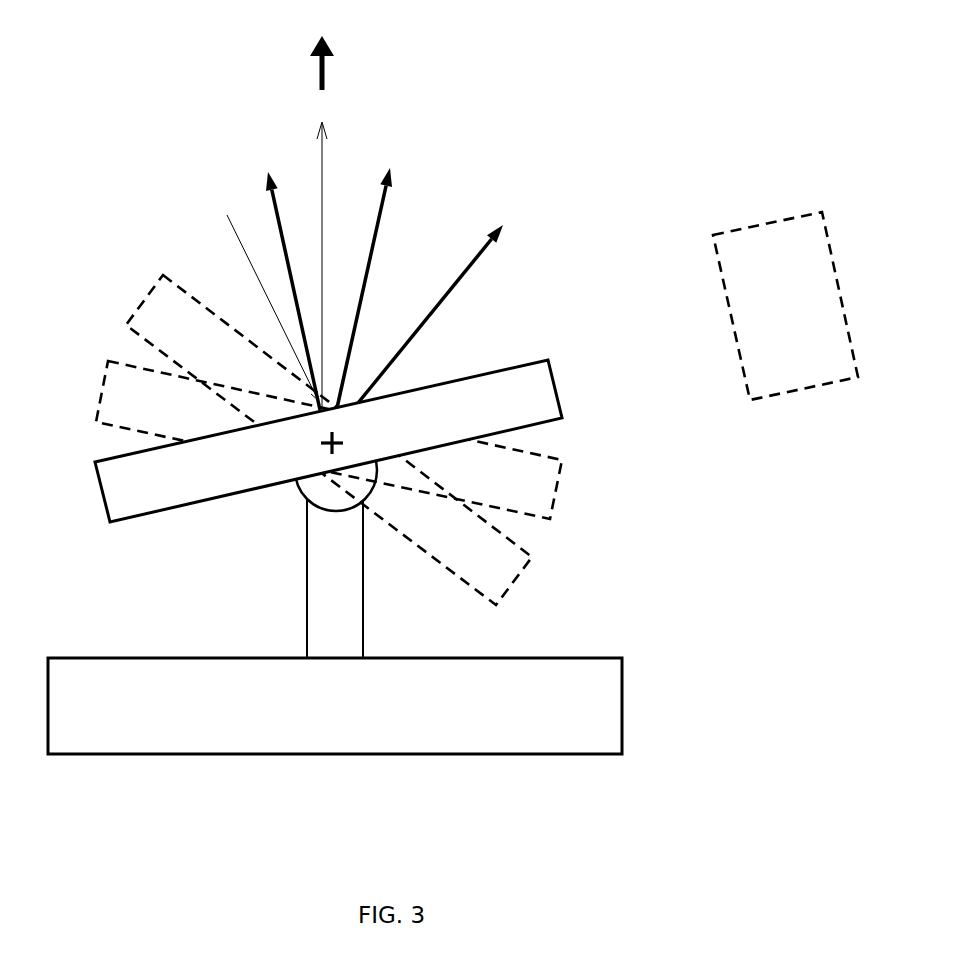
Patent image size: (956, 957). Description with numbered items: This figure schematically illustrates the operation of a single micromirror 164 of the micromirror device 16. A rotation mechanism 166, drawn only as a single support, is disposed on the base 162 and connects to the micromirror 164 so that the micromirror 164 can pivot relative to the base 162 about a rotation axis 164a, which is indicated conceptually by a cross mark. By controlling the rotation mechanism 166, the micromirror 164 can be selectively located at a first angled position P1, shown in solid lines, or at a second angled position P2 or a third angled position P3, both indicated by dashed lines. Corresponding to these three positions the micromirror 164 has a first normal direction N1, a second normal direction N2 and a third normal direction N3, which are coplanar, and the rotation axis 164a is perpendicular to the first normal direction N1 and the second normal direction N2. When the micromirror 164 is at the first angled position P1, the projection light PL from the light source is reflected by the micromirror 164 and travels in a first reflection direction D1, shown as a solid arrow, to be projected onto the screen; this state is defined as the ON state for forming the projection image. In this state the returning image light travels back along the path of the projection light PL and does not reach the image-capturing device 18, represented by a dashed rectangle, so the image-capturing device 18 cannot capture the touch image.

The micromirror device 16 is at (560, 98).
The image-capturing device 18 is at (768, 222).
The base 162 is at (594, 710).
The micromirror 164 is at (540, 390).
The rotation axis 164a is at (315, 448).
The rotation mechanism 166 is at (313, 609).
The first angled position P1 is at (100, 458).
The second angled position P2 is at (105, 358).
The third angled position P3 is at (162, 273).
The first normal direction N1 is at (283, 278).
The second normal direction N2 is at (372, 277).
The third normal direction N3 is at (442, 302).
The first reflection direction D1 is at (326, 48).
The projection light PL is at (322, 155).